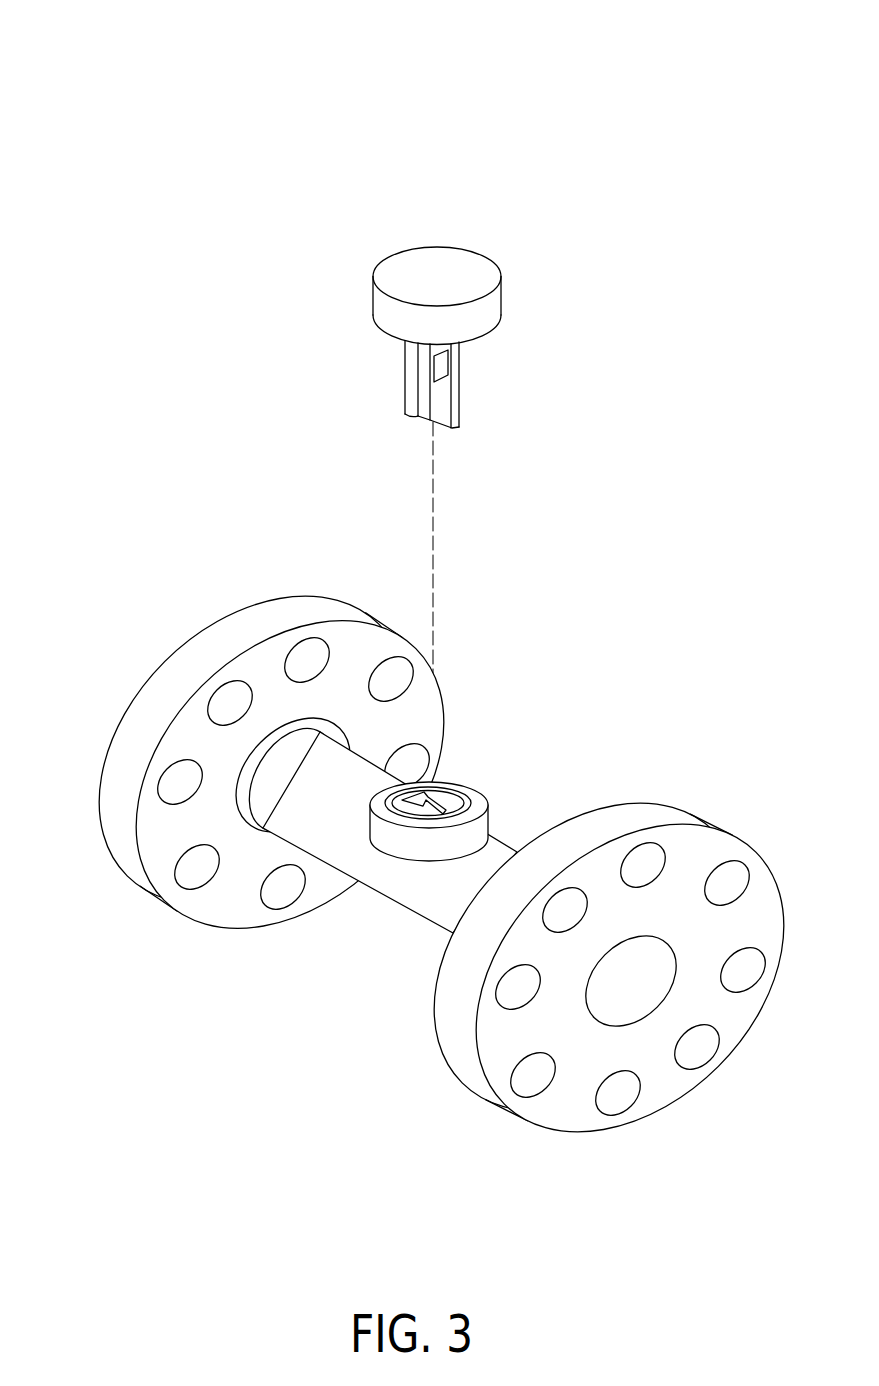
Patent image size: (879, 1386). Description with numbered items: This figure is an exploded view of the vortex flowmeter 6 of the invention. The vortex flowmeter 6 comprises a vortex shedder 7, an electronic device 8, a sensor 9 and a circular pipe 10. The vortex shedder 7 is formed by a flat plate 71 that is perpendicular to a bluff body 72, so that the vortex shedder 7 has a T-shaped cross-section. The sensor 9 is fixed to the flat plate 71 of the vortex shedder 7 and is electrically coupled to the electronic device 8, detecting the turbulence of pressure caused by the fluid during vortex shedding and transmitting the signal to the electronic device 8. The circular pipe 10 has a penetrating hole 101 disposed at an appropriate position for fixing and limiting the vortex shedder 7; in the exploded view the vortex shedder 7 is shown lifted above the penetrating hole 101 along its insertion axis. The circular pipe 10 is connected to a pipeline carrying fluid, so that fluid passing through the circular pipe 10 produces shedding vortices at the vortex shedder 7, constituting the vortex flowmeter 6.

The vortex flowmeter 6 is at (207, 202).
The vortex shedder 7 is at (381, 371).
The electronic device 8 is at (449, 278).
The sensor 9 is at (443, 366).
The flat plate 71 is at (439, 409).
The bluff body 72 is at (406, 397).
The circular pipe 10 is at (390, 873).
The penetrating hole 101 is at (430, 792).